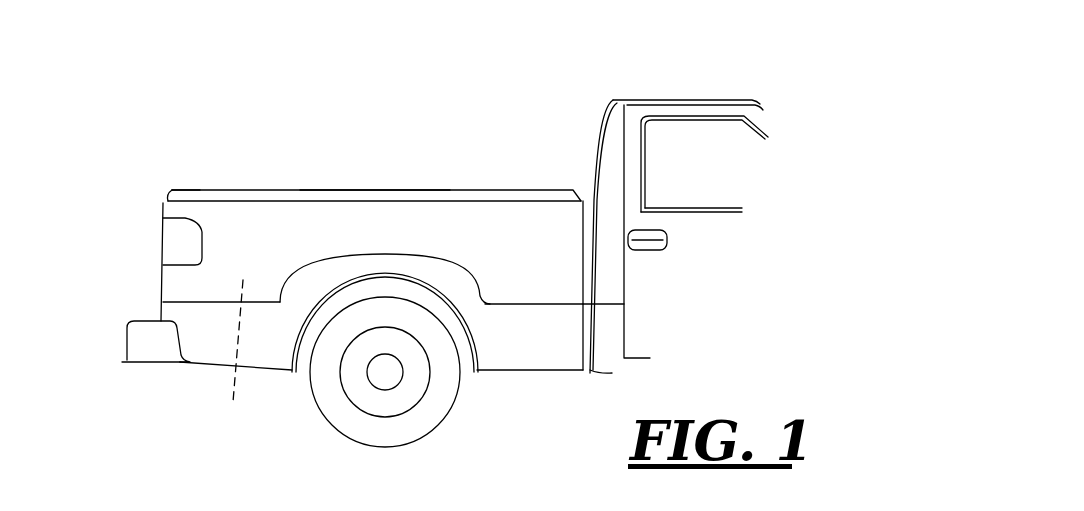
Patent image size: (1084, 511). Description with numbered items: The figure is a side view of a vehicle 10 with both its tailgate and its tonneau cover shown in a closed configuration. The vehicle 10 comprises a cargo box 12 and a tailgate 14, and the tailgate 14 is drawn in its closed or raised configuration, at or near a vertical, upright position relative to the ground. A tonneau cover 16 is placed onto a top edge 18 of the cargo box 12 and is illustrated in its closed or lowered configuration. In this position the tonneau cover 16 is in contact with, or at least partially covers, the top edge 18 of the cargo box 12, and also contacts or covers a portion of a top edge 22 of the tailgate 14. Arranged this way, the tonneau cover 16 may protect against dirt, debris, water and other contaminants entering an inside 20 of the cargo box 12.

The vehicle 10 is at (655, 83).
The cargo box 12 is at (291, 220).
The tailgate 14 is at (162, 272).
The tonneau cover 16 is at (503, 173).
The top edge 18 is at (395, 203).
The inside 20 is at (229, 362).
The top edge 22 is at (168, 200).